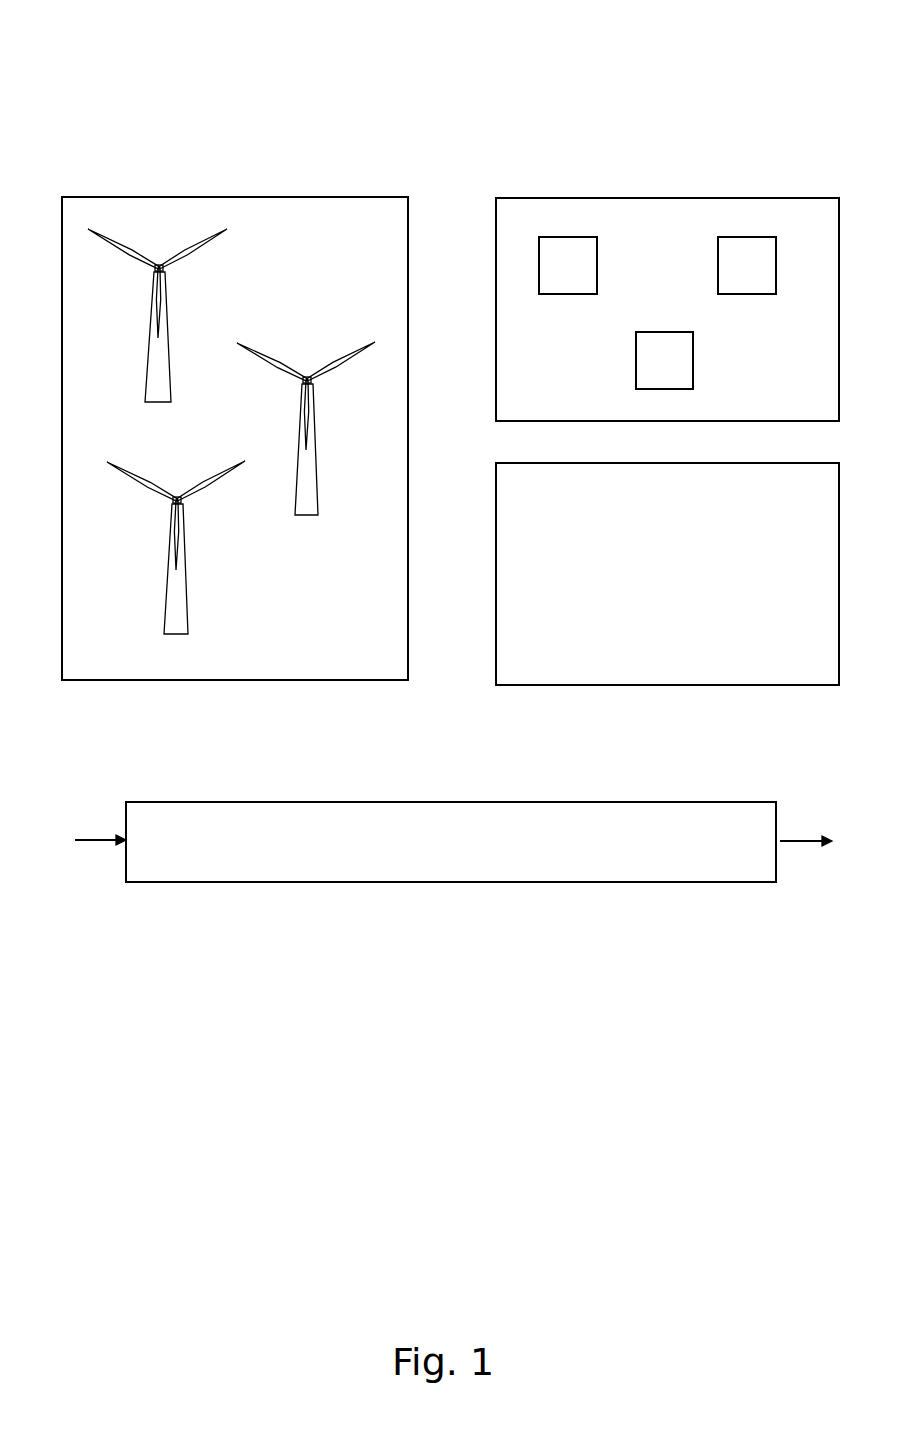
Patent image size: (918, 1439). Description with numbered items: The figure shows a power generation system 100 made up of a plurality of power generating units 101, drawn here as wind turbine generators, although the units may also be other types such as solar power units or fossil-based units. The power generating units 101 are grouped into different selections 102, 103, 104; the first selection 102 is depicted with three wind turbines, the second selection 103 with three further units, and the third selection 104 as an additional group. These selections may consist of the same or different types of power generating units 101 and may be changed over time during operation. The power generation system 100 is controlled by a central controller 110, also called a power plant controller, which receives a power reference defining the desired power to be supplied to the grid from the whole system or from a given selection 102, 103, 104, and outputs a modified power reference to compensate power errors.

The power generation system 100 is at (132, 67).
The power generating unit 101 is at (180, 297).
The first selection of power generating units 102 is at (254, 190).
The second selection of power generating units 103 is at (685, 188).
The selection of power generating units 104 is at (691, 688).
The central controller 110 is at (244, 897).